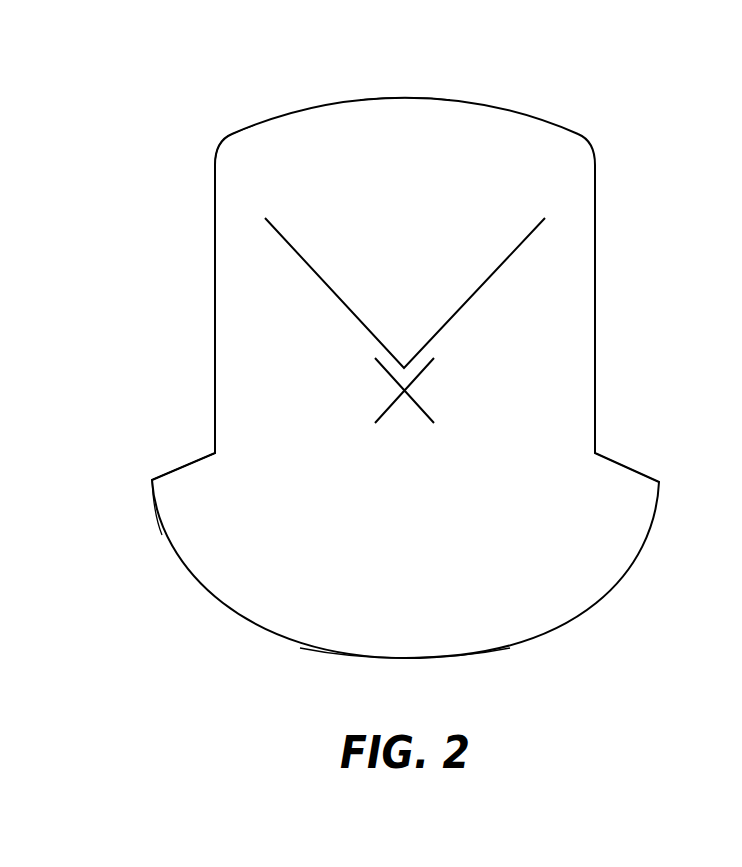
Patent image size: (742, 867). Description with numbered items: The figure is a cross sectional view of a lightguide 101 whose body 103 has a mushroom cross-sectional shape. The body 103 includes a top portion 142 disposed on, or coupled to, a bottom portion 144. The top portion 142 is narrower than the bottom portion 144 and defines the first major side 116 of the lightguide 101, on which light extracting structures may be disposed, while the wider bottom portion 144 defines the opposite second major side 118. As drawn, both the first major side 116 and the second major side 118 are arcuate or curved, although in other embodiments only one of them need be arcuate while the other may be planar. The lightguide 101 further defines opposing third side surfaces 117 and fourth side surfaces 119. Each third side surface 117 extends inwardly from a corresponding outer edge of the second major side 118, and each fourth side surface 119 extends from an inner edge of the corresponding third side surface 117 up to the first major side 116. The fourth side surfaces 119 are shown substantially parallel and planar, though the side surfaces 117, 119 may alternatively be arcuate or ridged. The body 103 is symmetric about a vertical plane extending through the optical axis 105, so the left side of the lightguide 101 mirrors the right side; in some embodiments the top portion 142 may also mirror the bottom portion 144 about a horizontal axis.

The lightguide 101 is at (192, 63).
The body 103 is at (416, 253).
The optical axis 105 is at (402, 390).
The first major side 116 is at (405, 97).
The third side surfaces 117 is at (183, 463).
The second major side 118 is at (500, 648).
The fourth side surfaces 119 is at (215, 245).
The top portion 142 is at (215, 146).
The bottom portion 144 is at (150, 477).